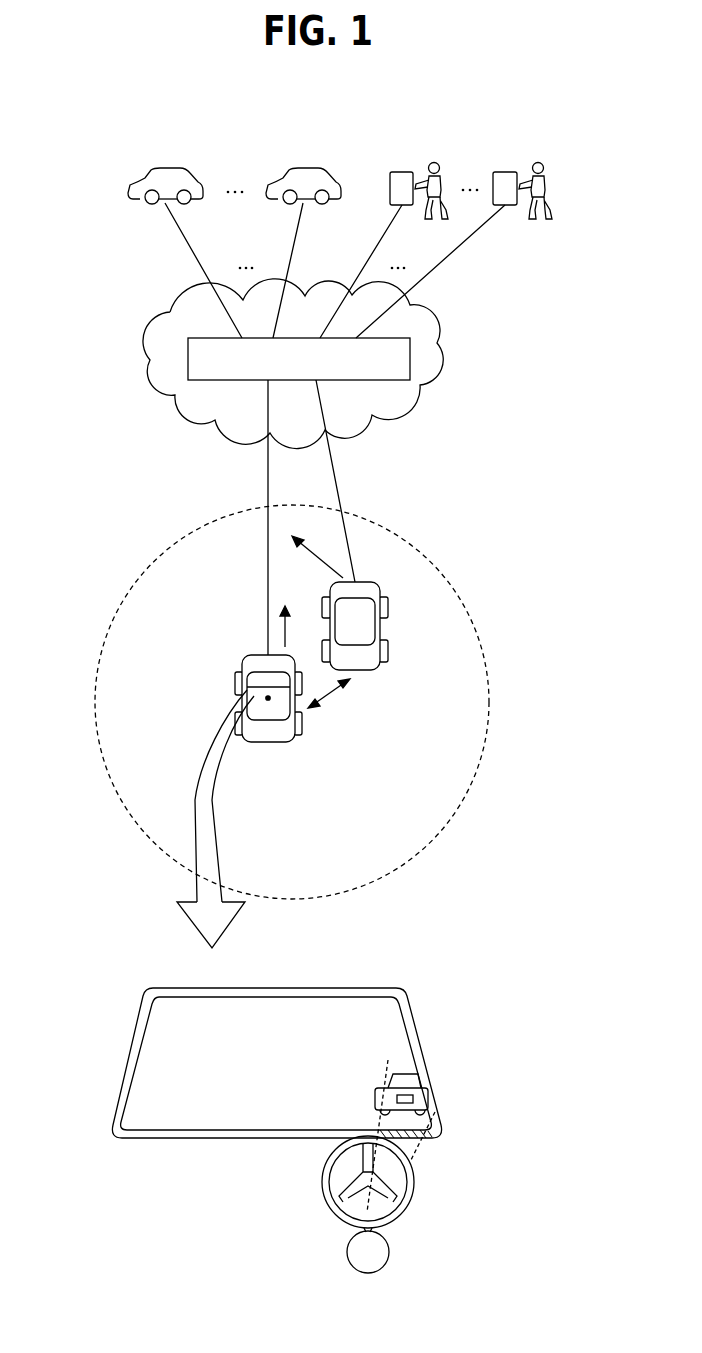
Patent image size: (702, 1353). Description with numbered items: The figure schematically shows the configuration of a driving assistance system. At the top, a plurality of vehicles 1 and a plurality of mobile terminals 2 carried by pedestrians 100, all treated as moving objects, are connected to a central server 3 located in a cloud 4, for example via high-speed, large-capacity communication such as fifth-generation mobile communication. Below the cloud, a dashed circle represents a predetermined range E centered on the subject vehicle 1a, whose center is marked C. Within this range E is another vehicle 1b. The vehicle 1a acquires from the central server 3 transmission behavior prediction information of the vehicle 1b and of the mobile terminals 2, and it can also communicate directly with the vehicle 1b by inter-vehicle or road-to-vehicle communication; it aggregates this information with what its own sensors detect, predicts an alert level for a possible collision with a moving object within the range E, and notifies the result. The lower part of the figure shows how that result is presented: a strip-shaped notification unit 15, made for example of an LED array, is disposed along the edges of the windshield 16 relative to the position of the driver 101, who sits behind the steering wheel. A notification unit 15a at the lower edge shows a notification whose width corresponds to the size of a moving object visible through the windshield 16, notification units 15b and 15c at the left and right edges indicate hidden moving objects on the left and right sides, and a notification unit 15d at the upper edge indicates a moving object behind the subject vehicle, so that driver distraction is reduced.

The vehicle 1 is at (173, 167).
The vehicle 1a is at (241, 667).
The vehicle 1b is at (380, 585).
The mobile terminal 2 is at (403, 172).
The pedestrian 100 is at (436, 160).
The central server 3 is at (410, 355).
The cloud 4 is at (438, 328).
The predetermined range E is at (473, 608).
The center of vehicle C is at (269, 702).
The notification unit 15 is at (282, 1065).
The notification unit 15a is at (266, 1137).
The notification unit 15b is at (130, 1056).
The notification unit 15c is at (426, 1058).
The notification unit 15d is at (350, 989).
The windshield 16 is at (390, 1038).
The driver 101 is at (390, 1250).